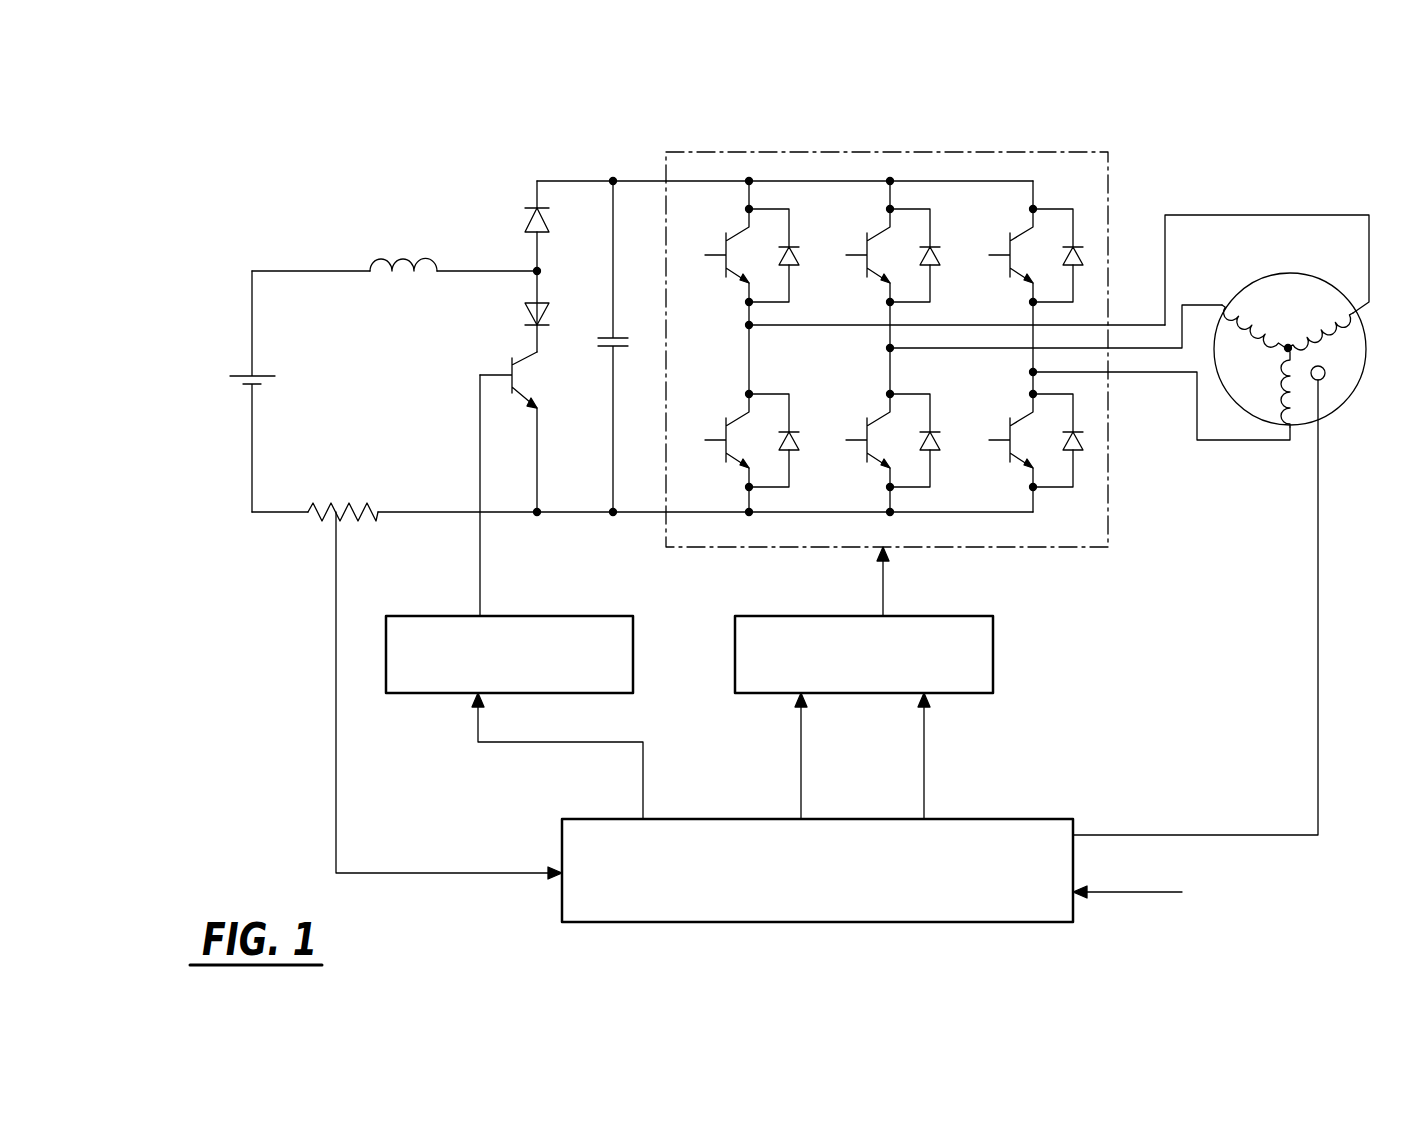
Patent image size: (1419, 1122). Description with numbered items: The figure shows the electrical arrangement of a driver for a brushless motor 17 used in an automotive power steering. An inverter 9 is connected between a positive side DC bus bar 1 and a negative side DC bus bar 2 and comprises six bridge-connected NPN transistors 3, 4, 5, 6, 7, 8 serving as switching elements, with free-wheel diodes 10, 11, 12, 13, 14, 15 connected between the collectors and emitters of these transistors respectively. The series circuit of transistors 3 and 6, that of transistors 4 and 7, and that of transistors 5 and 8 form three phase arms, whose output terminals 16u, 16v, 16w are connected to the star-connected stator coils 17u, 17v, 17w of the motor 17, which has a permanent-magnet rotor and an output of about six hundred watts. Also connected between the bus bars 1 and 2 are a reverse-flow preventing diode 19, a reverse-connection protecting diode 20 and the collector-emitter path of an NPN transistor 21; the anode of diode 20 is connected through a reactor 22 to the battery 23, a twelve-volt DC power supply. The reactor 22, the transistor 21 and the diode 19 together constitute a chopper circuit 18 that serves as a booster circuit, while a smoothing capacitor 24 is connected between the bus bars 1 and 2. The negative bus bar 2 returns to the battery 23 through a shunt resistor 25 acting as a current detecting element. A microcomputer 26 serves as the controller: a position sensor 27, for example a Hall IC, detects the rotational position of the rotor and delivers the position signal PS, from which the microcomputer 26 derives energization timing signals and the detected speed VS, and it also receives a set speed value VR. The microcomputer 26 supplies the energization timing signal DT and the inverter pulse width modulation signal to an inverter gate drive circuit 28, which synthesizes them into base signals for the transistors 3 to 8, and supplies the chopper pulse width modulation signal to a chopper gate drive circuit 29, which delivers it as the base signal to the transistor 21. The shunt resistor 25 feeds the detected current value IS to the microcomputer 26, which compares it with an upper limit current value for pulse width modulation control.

The positive side DC bus bar 1 is at (591, 181).
The negative side DC bus bar 2 is at (590, 512).
The NPN transistor 3 is at (718, 254).
The NPN transistor 4 is at (857, 255).
The NPN transistor 5 is at (992, 255).
The NPN transistor 6 is at (710, 439).
The NPN transistor 7 is at (850, 439).
The NPN transistor 8 is at (992, 439).
The inverter 9 is at (903, 329).
The free-wheel diode 10 is at (800, 258).
The free-wheel diode 11 is at (941, 258).
The free-wheel diode 12 is at (1084, 258).
The free-wheel diode 13 is at (800, 441).
The free-wheel diode 14 is at (941, 441).
The free-wheel diode 15 is at (1084, 441).
The output terminal 16u is at (749, 325).
The output terminal 16v is at (890, 348).
The output terminal 16w is at (1033, 372).
The brushless motor 17 is at (1286, 349).
The stator coil 17u is at (1300, 302).
The stator coil 17v is at (1258, 315).
The stator coil 17w is at (1302, 430).
The chopper circuit 18 is at (506, 316).
The reverse-flow preventing diode 19 is at (525, 215).
The reverse-connection protecting diode 20 is at (525, 312).
The NPN transistor 21 is at (512, 390).
The reactor 22 is at (400, 262).
The battery 23 is at (240, 376).
The smoothing capacitor 24 is at (600, 345).
The shunt resistor 25 is at (327, 525).
The microcomputer 26 is at (562, 835).
The position sensor 27 is at (1330, 377).
The inverter gate drive circuit 28 is at (993, 640).
The chopper gate drive circuit 29 is at (570, 616).